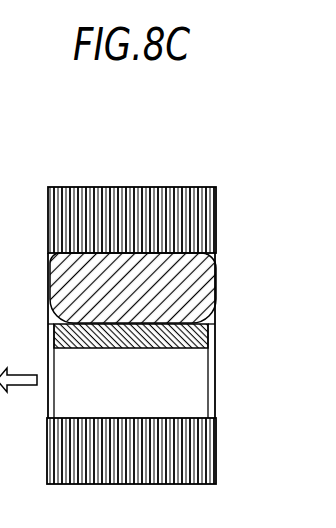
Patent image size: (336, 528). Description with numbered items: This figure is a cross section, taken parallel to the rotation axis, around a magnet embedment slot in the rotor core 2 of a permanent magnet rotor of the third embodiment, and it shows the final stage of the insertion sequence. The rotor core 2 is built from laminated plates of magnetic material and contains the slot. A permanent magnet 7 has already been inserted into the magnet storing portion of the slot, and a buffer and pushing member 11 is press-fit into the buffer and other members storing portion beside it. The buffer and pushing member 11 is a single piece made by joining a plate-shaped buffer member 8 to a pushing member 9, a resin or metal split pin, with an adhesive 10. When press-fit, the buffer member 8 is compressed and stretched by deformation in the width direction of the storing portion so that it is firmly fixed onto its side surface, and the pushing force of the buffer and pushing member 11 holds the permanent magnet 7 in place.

The rotor core 2 is at (50, 213).
The permanent magnet 7 is at (59, 272).
The buffer member 8 is at (209, 332).
The pushing member 9 is at (205, 400).
The adhesive 10 is at (215, 348).
The buffer and pushing member 11 is at (247, 365).